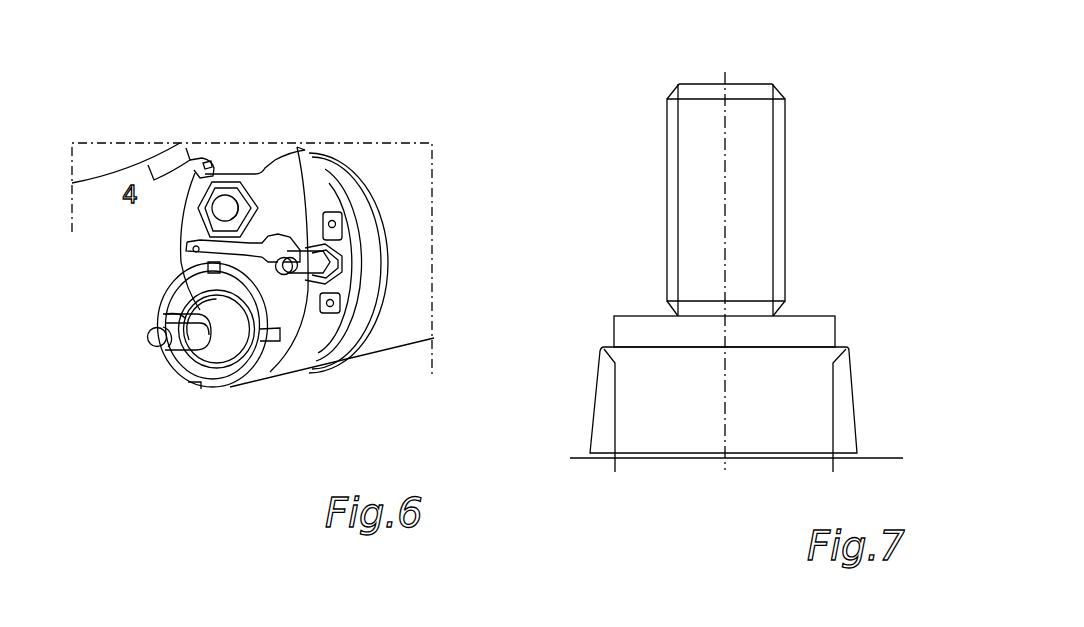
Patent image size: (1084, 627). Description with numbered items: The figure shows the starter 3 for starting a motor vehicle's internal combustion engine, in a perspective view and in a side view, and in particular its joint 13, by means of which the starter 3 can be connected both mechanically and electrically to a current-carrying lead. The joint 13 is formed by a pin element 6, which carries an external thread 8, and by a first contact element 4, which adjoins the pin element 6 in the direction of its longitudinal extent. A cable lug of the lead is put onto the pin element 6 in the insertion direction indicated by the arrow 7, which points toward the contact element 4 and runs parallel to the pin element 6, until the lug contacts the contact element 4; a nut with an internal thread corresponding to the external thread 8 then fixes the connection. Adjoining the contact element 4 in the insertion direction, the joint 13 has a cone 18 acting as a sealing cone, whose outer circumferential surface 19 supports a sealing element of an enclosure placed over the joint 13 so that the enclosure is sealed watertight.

In FIG. 6, the starter 3 is at (351, 352).
In FIG. 6, the first contact element 4 is at (191, 315).
In FIG. 7, the first contact element 4 is at (826, 328).
In FIG. 6, the pin element 6 is at (153, 348).
In FIG. 7, the pin element 6 is at (753, 112).
In FIG. 7, the arrow 7 is at (823, 145).
In FIG. 6, the external thread 8 is at (167, 310).
In FIG. 7, the external thread 8 is at (786, 126).
In FIG. 6, the joint 13 is at (212, 382).
In FIG. 7, the joint 13 is at (688, 438).
In FIG. 6, the cone 18 is at (238, 352).
In FIG. 7, the cone 18 is at (842, 408).
In FIG. 6, the outer circumferential surface 19 is at (255, 343).
In FIG. 7, the outer circumferential surface 19 is at (850, 370).